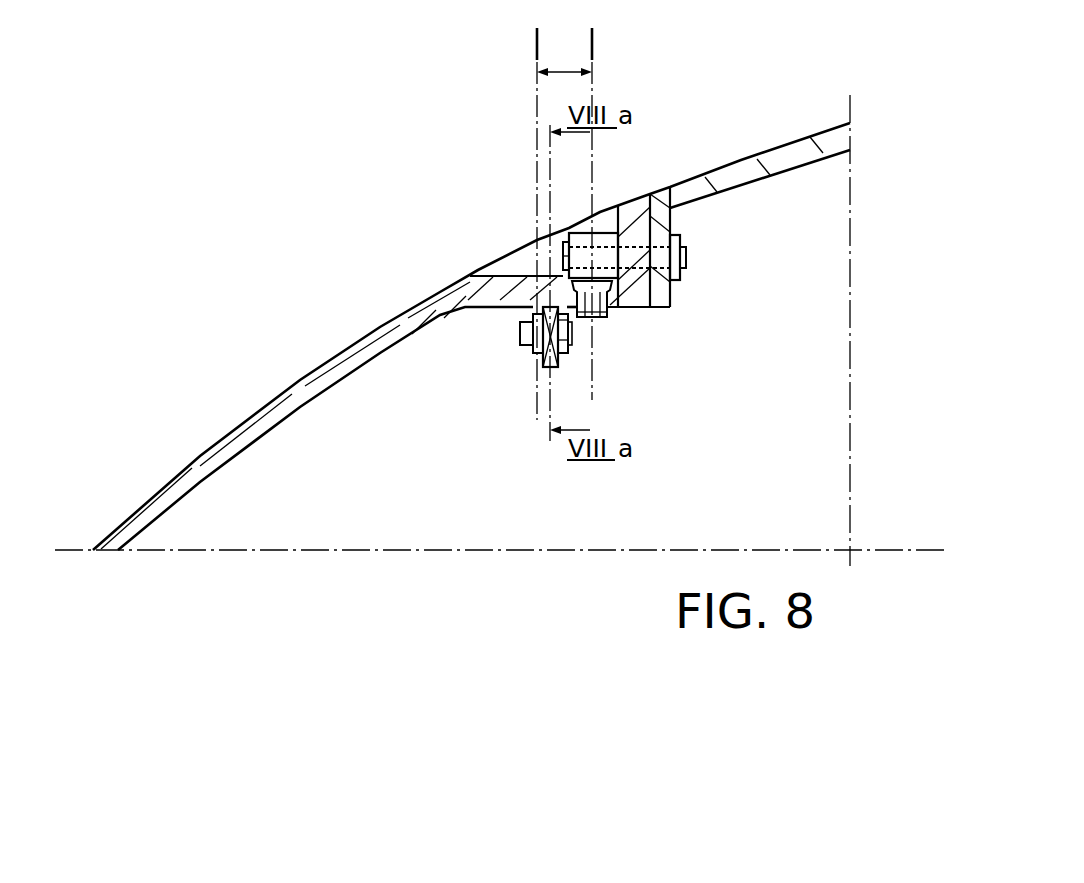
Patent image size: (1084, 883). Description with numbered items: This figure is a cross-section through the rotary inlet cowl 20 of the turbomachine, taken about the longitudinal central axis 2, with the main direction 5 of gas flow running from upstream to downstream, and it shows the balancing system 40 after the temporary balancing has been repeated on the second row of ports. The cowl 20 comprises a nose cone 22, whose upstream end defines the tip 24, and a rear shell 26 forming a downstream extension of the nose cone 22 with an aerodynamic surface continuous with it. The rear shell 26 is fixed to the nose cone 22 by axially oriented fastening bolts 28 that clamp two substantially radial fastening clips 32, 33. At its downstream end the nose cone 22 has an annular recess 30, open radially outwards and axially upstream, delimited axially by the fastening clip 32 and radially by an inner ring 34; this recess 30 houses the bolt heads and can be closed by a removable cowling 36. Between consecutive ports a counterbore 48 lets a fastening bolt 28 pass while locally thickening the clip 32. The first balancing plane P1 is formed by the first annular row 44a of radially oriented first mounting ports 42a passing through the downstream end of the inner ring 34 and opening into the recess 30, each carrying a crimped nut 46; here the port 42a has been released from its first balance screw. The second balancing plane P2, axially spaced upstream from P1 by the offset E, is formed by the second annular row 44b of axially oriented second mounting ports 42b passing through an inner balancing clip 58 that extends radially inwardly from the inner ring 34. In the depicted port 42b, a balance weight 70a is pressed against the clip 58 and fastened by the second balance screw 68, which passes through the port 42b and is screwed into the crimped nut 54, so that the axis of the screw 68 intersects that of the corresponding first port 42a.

The longitudinal central axis 2 is at (938, 548).
The main direction of gases 5 is at (930, 280).
The rotary inlet cowl 20 is at (220, 296).
The nose cone 22 is at (208, 438).
The tip 24 is at (115, 543).
The rear shell 26 is at (748, 142).
The fastening bolts 28 is at (565, 258).
The annular recess 30 is at (508, 268).
The fastening clip of the nose cone 32 is at (640, 198).
The fastening clip of the rear shell 33 is at (662, 222).
The inner ring 34 is at (455, 312).
The removable cowling 36 is at (560, 234).
The balancing system 40 is at (626, 327).
The first mounting port 42a is at (607, 310).
The first annular row 44a is at (765, 308).
The nut 46 is at (605, 318).
The counterbore 48 is at (607, 233).
The nut 54 is at (528, 346).
The inner balancing clip 58 is at (480, 303).
The second balance screw 68 is at (565, 322).
The balance weight 70a is at (572, 337).
The second mounting port 42b is at (540, 353).
The second annular row 44b is at (525, 498).
The first balancing plane P1 is at (593, 43).
The second balancing plane P2 is at (537, 42).
The offset E is at (564, 60).